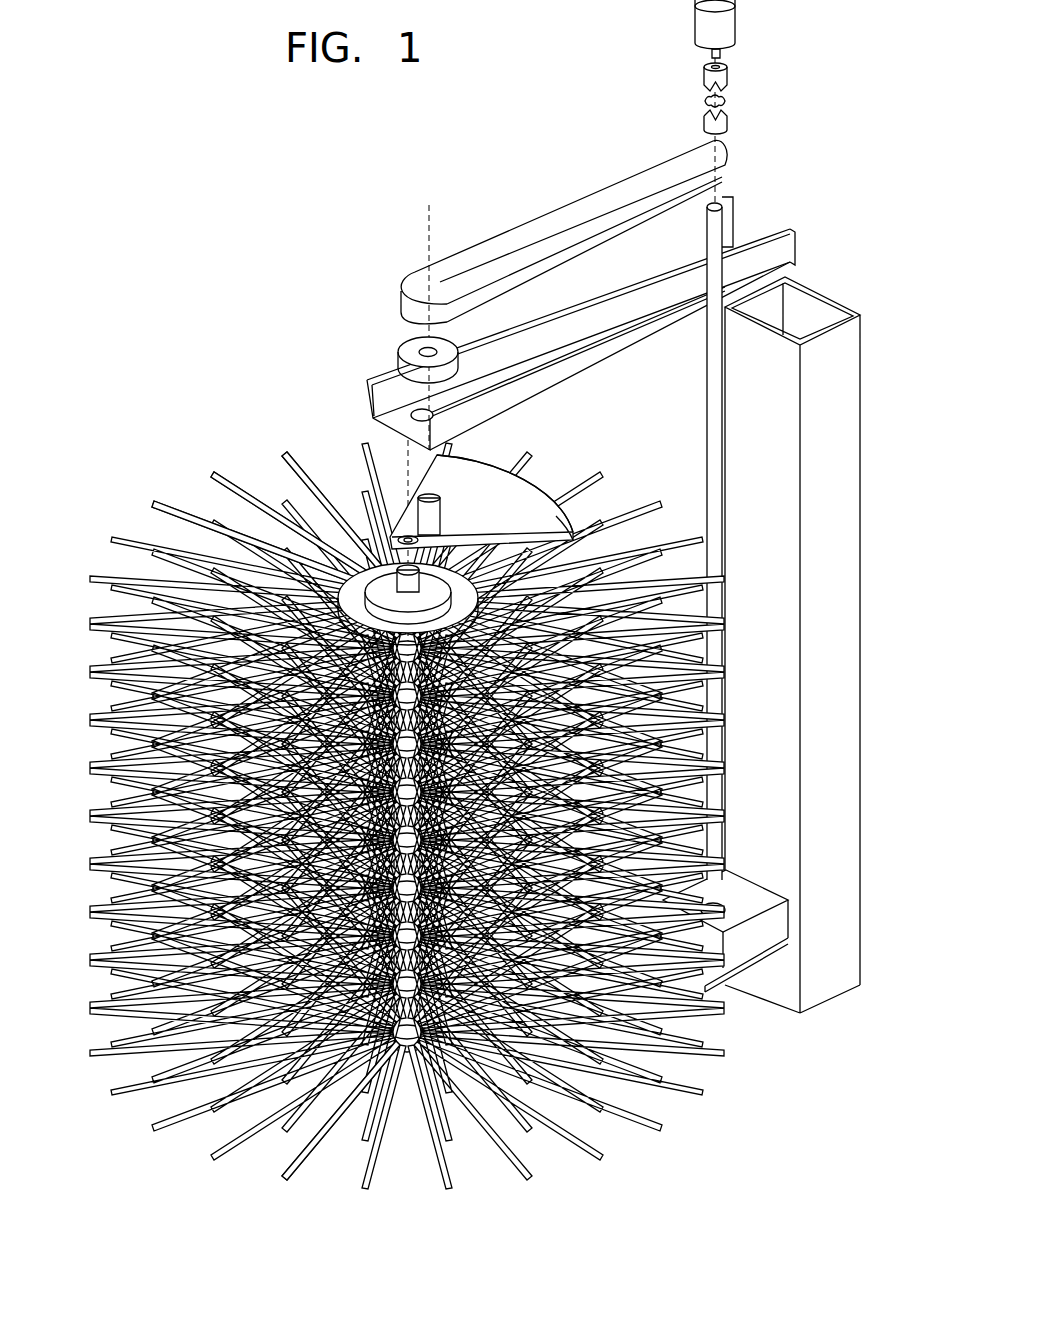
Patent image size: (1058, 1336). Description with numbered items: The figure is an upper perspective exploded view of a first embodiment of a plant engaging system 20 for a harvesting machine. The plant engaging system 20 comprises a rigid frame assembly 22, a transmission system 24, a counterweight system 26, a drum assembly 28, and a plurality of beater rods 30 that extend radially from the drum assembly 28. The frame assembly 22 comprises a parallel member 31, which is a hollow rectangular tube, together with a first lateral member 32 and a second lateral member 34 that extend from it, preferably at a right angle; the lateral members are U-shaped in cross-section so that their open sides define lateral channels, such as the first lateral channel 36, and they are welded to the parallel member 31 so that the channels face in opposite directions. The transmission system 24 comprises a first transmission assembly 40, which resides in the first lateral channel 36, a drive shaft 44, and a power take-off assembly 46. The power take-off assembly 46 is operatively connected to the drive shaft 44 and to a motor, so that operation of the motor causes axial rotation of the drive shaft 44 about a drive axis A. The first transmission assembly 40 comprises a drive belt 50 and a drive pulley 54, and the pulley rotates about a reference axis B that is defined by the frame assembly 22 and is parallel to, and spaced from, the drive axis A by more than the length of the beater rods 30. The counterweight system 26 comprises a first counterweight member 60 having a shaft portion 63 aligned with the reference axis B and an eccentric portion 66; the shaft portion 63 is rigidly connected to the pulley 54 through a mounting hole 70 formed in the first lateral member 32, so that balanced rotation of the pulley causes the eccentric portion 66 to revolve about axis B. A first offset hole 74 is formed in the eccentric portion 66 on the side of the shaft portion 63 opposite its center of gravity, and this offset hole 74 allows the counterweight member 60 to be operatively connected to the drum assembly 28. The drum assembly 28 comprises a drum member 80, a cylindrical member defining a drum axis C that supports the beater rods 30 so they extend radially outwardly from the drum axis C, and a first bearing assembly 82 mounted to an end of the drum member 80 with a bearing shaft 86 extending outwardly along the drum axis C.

The plant engaging system 20 is at (799, 101).
The rigid frame assembly 22 is at (875, 329).
The transmission system 24 is at (755, 70).
The counterweight system 26 is at (570, 444).
The drum assembly 28 is at (351, 1077).
The beater rods 30 is at (137, 552).
The column tube 31 is at (850, 465).
The first lateral member 32 is at (775, 258).
The second lateral member 34 is at (765, 928).
The first lateral channel 36 is at (597, 316).
The first transmission assembly 40 is at (575, 190).
The drive shaft 44 is at (718, 232).
The power take-off assembly 46 is at (686, 50).
The drive belt 50 is at (522, 232).
The drive pulley 54 is at (398, 342).
The first counterweight member 60 is at (550, 484).
The cam pin 63 is at (432, 498).
The eccentric portion 66 is at (555, 512).
The mounting hole 70 is at (410, 414).
The first offset hole 74 is at (360, 538).
The drum member 80 is at (398, 1050).
The first bearing assembly 82 is at (237, 535).
The bearing shaft 86 is at (283, 517).
The drive axis A is at (718, 190).
The reference axis B is at (425, 222).
The drum axis C is at (405, 450).